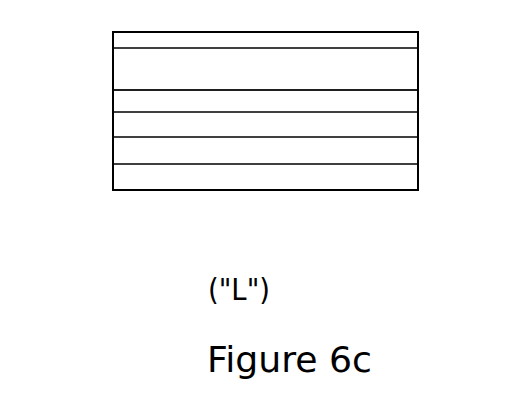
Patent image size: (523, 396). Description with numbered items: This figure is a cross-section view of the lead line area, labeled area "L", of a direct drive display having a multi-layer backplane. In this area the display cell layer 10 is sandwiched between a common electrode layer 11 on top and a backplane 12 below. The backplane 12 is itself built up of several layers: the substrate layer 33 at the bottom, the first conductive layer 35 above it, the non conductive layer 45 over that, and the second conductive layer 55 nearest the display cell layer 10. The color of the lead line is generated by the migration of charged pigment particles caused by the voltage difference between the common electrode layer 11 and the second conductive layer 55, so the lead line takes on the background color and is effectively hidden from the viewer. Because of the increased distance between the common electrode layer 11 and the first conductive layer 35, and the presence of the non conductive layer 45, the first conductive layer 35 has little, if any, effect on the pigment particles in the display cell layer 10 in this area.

The common electrode layer 11 is at (291, 35).
The display cell layer 10 is at (291, 69).
The second conductive layer 55 is at (291, 97).
The non conductive layer 45 is at (291, 124).
The first conductive layer 35 is at (291, 150).
The substrate layer 33 is at (291, 178).
The backplane 12 is at (110, 102).